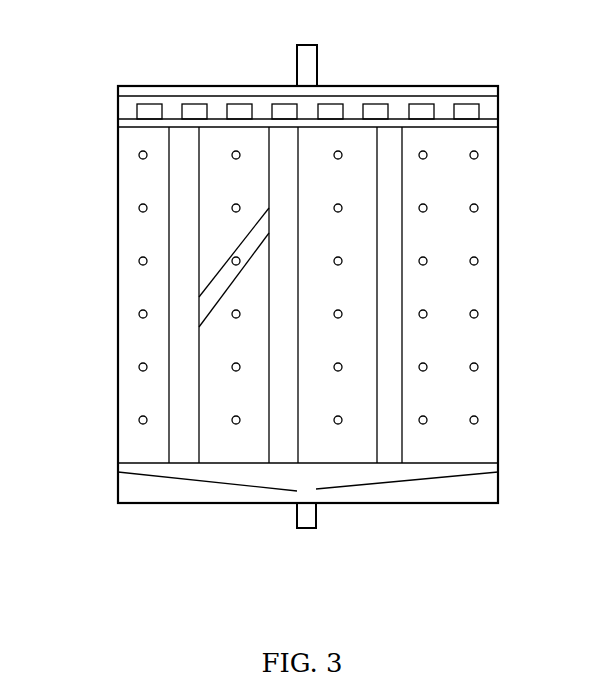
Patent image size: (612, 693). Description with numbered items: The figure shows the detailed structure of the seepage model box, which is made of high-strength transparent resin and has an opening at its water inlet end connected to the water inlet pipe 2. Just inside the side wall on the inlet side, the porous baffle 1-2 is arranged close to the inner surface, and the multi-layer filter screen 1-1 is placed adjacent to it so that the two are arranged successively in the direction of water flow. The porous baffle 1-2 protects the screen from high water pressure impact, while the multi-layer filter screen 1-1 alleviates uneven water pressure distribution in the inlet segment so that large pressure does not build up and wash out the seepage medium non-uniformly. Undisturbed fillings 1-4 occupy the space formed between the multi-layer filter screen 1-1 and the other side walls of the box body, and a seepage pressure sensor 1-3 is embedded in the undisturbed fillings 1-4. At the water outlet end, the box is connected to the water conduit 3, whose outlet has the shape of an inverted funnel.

The multi-layer filter screen 1-1 is at (178, 123).
The porous baffle 1-2 is at (352, 108).
The seepage pressure sensor 1-3 is at (474, 208).
The undisturbed filling 1-4 is at (138, 394).
The water inlet pipe 2 is at (317, 62).
The water conduit 3 is at (307, 508).